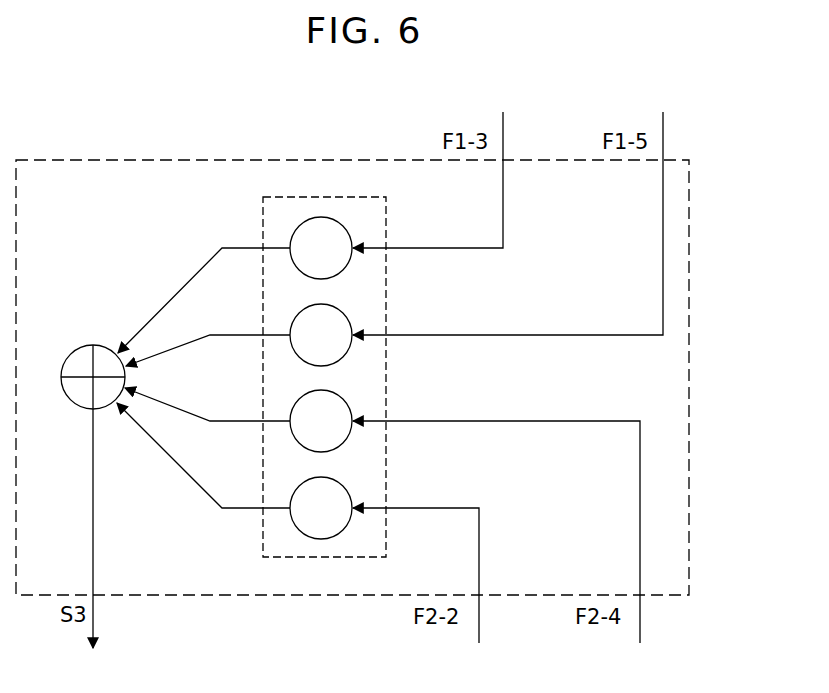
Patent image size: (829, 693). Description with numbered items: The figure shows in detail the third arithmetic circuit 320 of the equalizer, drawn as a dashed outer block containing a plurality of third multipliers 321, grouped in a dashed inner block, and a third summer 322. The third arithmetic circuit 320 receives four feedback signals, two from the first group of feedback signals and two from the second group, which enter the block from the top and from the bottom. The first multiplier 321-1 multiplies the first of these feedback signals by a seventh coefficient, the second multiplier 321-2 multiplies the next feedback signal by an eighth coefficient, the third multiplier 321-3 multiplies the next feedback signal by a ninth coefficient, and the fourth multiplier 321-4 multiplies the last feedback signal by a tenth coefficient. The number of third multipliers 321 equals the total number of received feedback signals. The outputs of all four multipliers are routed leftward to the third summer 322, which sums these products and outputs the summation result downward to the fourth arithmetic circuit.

The third arithmetic circuit 320 is at (689, 181).
The plurality of third multipliers 321 is at (386, 219).
The 3-1 multiplier 321-1 is at (345, 268).
The 3-2 multiplier 321-2 is at (345, 354).
The 3-3 multiplier 321-3 is at (345, 440).
The 3-4 multiplier 321-4 is at (345, 527).
The third summer 322 is at (72, 352).